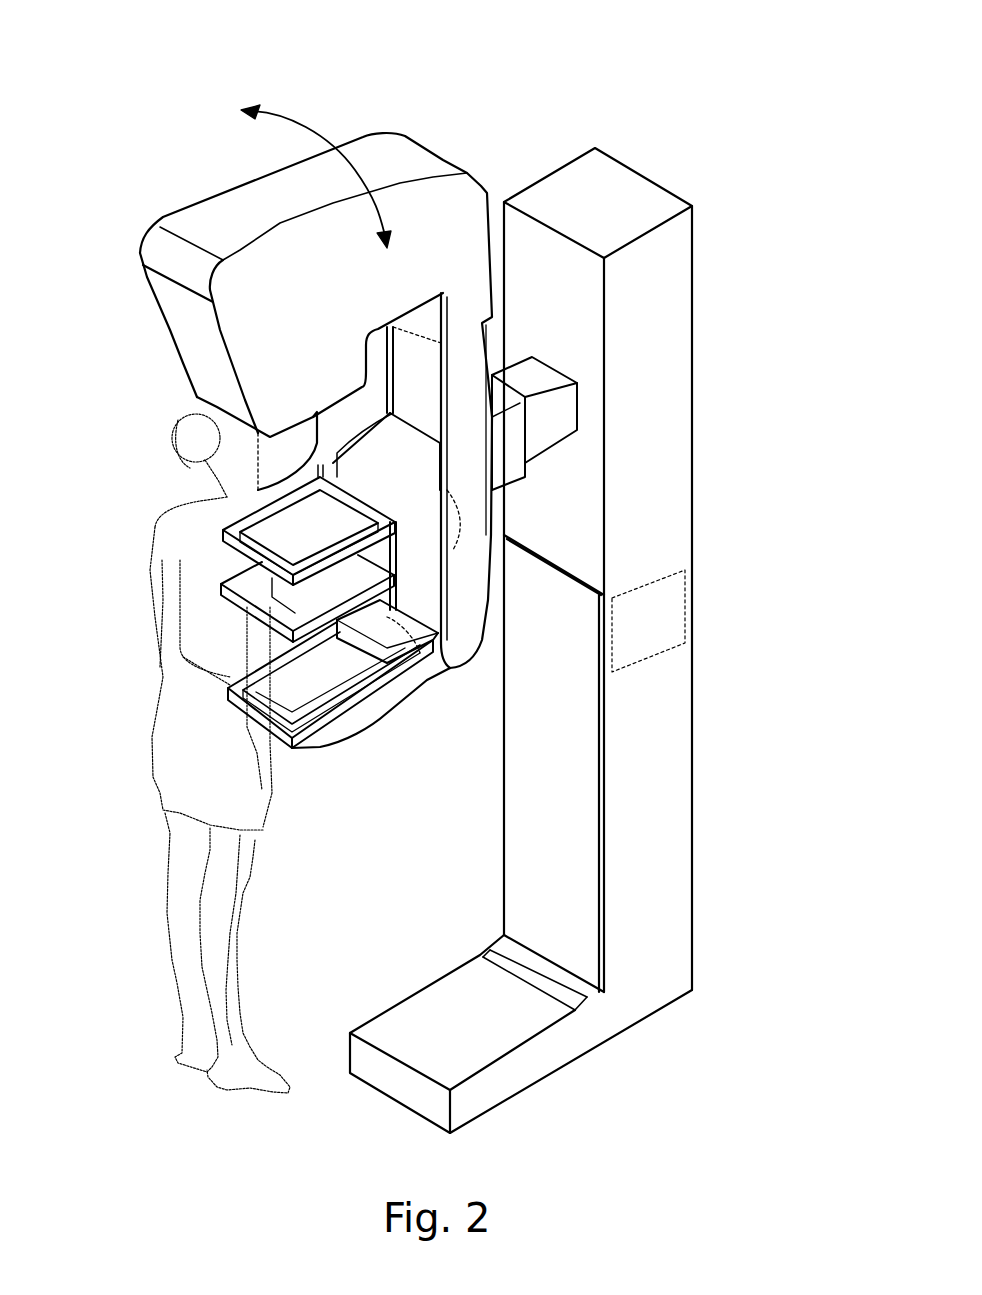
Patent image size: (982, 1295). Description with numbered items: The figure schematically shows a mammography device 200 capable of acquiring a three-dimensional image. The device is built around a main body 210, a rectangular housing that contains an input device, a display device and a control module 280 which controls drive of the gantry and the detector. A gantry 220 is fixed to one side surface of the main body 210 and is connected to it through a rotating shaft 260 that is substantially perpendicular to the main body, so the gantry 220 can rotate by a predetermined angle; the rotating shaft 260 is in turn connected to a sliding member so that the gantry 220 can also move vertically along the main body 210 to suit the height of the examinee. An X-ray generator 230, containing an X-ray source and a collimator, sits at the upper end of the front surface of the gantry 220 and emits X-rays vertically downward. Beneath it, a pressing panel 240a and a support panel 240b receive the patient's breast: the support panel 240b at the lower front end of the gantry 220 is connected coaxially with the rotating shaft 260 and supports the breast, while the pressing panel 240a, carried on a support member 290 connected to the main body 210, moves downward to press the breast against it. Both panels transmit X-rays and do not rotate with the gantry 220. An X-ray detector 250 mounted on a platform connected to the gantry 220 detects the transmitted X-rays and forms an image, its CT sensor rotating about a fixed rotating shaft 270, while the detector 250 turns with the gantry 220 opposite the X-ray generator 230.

The mammography device 200 is at (553, 123).
The main body 210 is at (675, 373).
The gantry 220 is at (237, 208).
The X-ray generator 230 is at (287, 447).
The pressing panel 240a is at (227, 537).
The support panel 240b is at (227, 585).
The X-ray detector 250 is at (340, 713).
The rotating shaft 260 is at (557, 418).
The fixed rotating shaft 270 is at (412, 697).
The control module 280 is at (672, 615).
The support member 290 is at (430, 487).